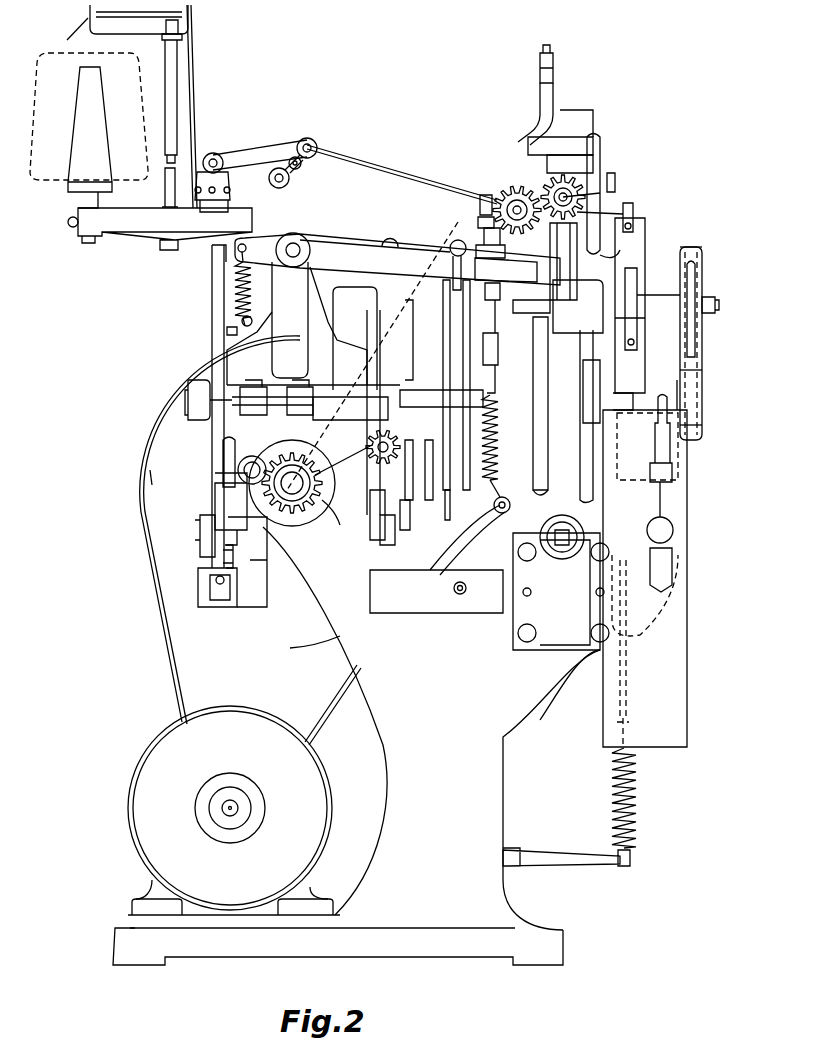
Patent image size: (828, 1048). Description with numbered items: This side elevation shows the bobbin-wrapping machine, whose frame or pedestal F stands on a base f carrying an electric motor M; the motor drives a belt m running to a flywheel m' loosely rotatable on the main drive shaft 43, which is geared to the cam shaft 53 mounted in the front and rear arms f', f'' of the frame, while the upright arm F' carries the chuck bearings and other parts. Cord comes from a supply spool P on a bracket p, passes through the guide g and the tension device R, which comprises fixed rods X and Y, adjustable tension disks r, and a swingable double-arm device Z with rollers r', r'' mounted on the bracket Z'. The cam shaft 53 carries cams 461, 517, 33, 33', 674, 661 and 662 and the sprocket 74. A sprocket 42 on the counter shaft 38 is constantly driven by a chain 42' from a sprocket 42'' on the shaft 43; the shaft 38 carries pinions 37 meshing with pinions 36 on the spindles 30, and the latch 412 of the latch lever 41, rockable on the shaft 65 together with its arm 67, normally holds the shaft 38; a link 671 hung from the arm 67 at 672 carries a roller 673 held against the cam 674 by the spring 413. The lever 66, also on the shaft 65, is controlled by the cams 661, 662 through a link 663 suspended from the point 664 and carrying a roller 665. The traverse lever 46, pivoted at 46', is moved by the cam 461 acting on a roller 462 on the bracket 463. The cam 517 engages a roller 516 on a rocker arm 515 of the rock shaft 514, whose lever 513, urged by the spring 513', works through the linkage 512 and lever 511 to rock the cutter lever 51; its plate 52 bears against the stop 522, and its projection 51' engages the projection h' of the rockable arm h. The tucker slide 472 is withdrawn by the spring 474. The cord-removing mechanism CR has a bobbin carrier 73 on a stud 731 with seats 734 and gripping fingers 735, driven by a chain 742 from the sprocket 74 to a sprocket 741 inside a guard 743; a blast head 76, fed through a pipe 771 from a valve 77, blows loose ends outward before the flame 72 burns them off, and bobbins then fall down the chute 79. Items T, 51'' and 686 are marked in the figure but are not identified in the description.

The frame or pedestal F is at (452, 576).
The base f is at (338, 958).
The electric motor M is at (234, 810).
The belt m is at (239, 540).
The flywheel m' is at (115, 495).
The forwardly extending arm f' is at (566, 685).
The rearwardly extending arm f'' is at (250, 562).
The frame arm F' is at (575, 416).
The guide g is at (112, 30).
The tension rod T is at (192, 80).
The supply spool P is at (40, 73).
The bracket p is at (120, 233).
The tension disks r is at (213, 146).
The tension applying means R is at (258, 158).
The fixed rod X is at (198, 193).
The fixed rod Y is at (212, 193).
The bracket Z' is at (246, 194).
The tension applying rollers r' is at (322, 158).
The swingable double arm tension device Z is at (311, 175).
The tension applying rollers r'' is at (288, 191).
The latch lever 41 is at (386, 259).
The supporting shaft 65 is at (290, 255).
The spring 413 is at (238, 290).
The arm 67 is at (355, 241).
The pivot 672 is at (390, 242).
The lever 66 is at (412, 242).
The intermediate point 664 is at (452, 242).
The latch 412 is at (506, 269).
The pinions 37 is at (513, 205).
The counter shaft 38 is at (508, 197).
The spindles 30 is at (600, 193).
The lever 51 is at (511, 114).
The adjustable stop 522 is at (540, 70).
The projection 51' is at (565, 123).
The plate 52 is at (550, 163).
The projection h' is at (593, 114).
The rockable arm h is at (612, 187).
The tab 51'' is at (645, 172).
The operating lever 511 is at (492, 202).
The adjustable linkage 512 is at (492, 232).
The spring gripping fingers 735 is at (633, 208).
The pinions 36 is at (623, 214).
The bobbin carrier 73 is at (640, 238).
The seats 734 is at (642, 296).
The cord removing mechanism CR is at (683, 250).
The guard 743 is at (695, 250).
The sprocket 741 is at (695, 272).
The stud 731 is at (716, 303).
The chain 742 is at (690, 372).
The sprocket 74 is at (700, 429).
The flame 72 is at (670, 450).
The chute 79 is at (675, 612).
The slide member 472 is at (626, 672).
The spring 474 is at (635, 802).
The pipe 771 is at (540, 307).
The blast-head 76 is at (590, 330).
The cam 33 is at (602, 403).
The cam 33' is at (531, 482).
The rod 686 is at (470, 290).
The cam 674 is at (425, 305).
The rock shaft 514 is at (441, 402).
The lever 513 is at (508, 451).
The spring 513' is at (467, 540).
The cam 661 is at (424, 470).
The cam 662 is at (468, 462).
The link 663 is at (460, 482).
The link 671 is at (373, 536).
The roller 673 is at (405, 530).
The roller 665 is at (436, 591).
The cam shaft 53 is at (185, 400).
The rocker arm 515 is at (356, 429).
The sprocket 42 is at (340, 449).
The chain 42' is at (241, 463).
The main drive shaft 43 is at (292, 495).
The sprocket 42'' is at (324, 526).
The roller 516 is at (363, 515).
The cam 517 is at (372, 313).
The cam 461 is at (223, 450).
The valve 77 is at (215, 500).
The roller 462 is at (205, 520).
The bracket 463 is at (222, 562).
The pivot 46' is at (175, 587).
The traverse lever 46 is at (539, 582).